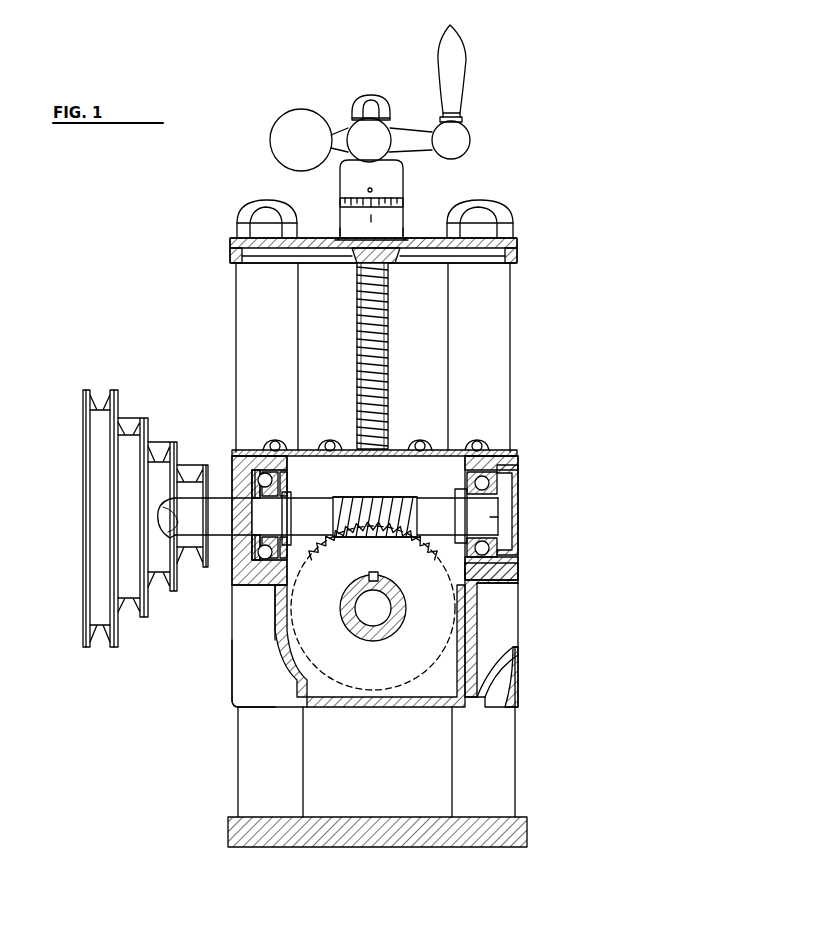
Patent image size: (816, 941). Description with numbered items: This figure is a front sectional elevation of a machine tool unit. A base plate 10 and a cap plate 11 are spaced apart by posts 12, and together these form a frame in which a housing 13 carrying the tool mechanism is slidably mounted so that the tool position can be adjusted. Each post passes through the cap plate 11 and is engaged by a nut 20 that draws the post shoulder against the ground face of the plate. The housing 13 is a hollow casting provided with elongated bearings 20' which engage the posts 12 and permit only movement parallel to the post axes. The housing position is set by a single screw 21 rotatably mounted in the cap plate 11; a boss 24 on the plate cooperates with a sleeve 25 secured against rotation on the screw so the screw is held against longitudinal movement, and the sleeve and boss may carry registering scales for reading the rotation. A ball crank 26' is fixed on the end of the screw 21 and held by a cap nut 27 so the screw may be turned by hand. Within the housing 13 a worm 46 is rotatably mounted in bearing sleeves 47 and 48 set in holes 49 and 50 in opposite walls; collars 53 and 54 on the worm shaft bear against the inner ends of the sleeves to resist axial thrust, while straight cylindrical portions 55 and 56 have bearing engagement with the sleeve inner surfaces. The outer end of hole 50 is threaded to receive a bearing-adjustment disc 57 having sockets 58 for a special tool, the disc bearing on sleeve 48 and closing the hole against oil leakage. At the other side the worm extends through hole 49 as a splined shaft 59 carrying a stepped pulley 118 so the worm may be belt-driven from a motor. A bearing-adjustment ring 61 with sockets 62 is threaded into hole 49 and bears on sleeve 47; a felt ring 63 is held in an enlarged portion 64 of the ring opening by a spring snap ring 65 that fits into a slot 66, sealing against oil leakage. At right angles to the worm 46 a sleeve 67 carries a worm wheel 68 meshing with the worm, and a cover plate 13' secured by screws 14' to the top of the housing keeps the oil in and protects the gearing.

The base plate 10 is at (522, 815).
The cap plate 11 is at (230, 250).
The posts 12 is at (236, 312).
The housing 13 is at (393, 635).
The cover plate 13' is at (468, 435).
The screws 14' is at (420, 435).
The nut 20 is at (365, 217).
The elongated bearings 20' is at (374, 646).
The screw 21 is at (357, 357).
The boss 24 is at (340, 233).
The sleeve 25 is at (403, 188).
The ball crank 26' is at (472, 92).
The cap nut 27 is at (364, 97).
The worm 46 is at (333, 497).
The bearing sleeve 47 is at (288, 490).
The bearing sleeve 48 is at (467, 476).
The hole 49 is at (260, 450).
The hole 50 is at (512, 456).
The collar 53 is at (292, 505).
The collar 54 is at (455, 497).
The straight cylindrical portion 55 is at (273, 566).
The straight cylindrical portion 56 is at (505, 518).
The bearing-adjustment disc 57 is at (518, 505).
The sockets 58 is at (515, 480).
The splined shaft 59 is at (190, 522).
The bearing-adjustment ring 61 is at (232, 465).
The sockets 62 is at (255, 560).
The ring 63 is at (254, 565).
The enlarged portion 64 is at (236, 456).
The spring snap ring 65 is at (284, 565).
The slot 66 is at (265, 565).
The sleeve 67 is at (380, 638).
The worm wheel 68 is at (392, 564).
The stepped pulley 118 is at (83, 460).